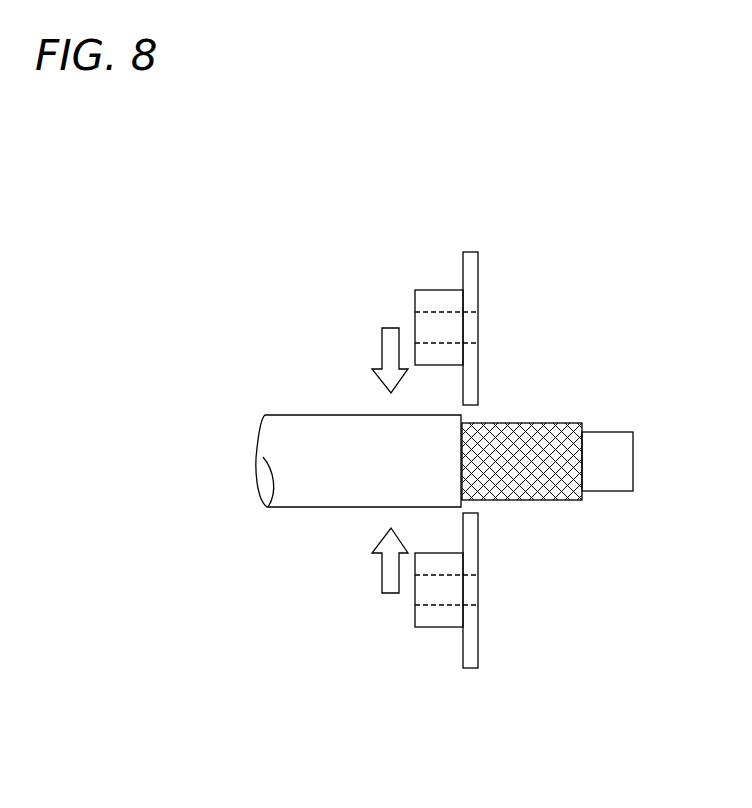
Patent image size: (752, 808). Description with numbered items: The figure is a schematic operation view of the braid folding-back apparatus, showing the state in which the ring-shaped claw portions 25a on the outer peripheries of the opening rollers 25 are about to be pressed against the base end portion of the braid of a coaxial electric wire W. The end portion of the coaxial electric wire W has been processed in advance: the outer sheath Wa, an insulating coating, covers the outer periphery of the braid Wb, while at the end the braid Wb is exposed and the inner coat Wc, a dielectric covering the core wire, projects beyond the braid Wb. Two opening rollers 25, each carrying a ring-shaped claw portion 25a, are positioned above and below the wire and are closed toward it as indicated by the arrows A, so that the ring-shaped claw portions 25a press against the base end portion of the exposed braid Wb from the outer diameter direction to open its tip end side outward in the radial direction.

The opening roller 25 is at (437, 288).
The ring-shaped claw portion 25a is at (478, 270).
The coaxial electric wire W is at (290, 405).
The outer sheath Wa is at (312, 508).
The braid Wb is at (520, 422).
The inner coat Wc is at (602, 431).
The arrows A is at (381, 460).